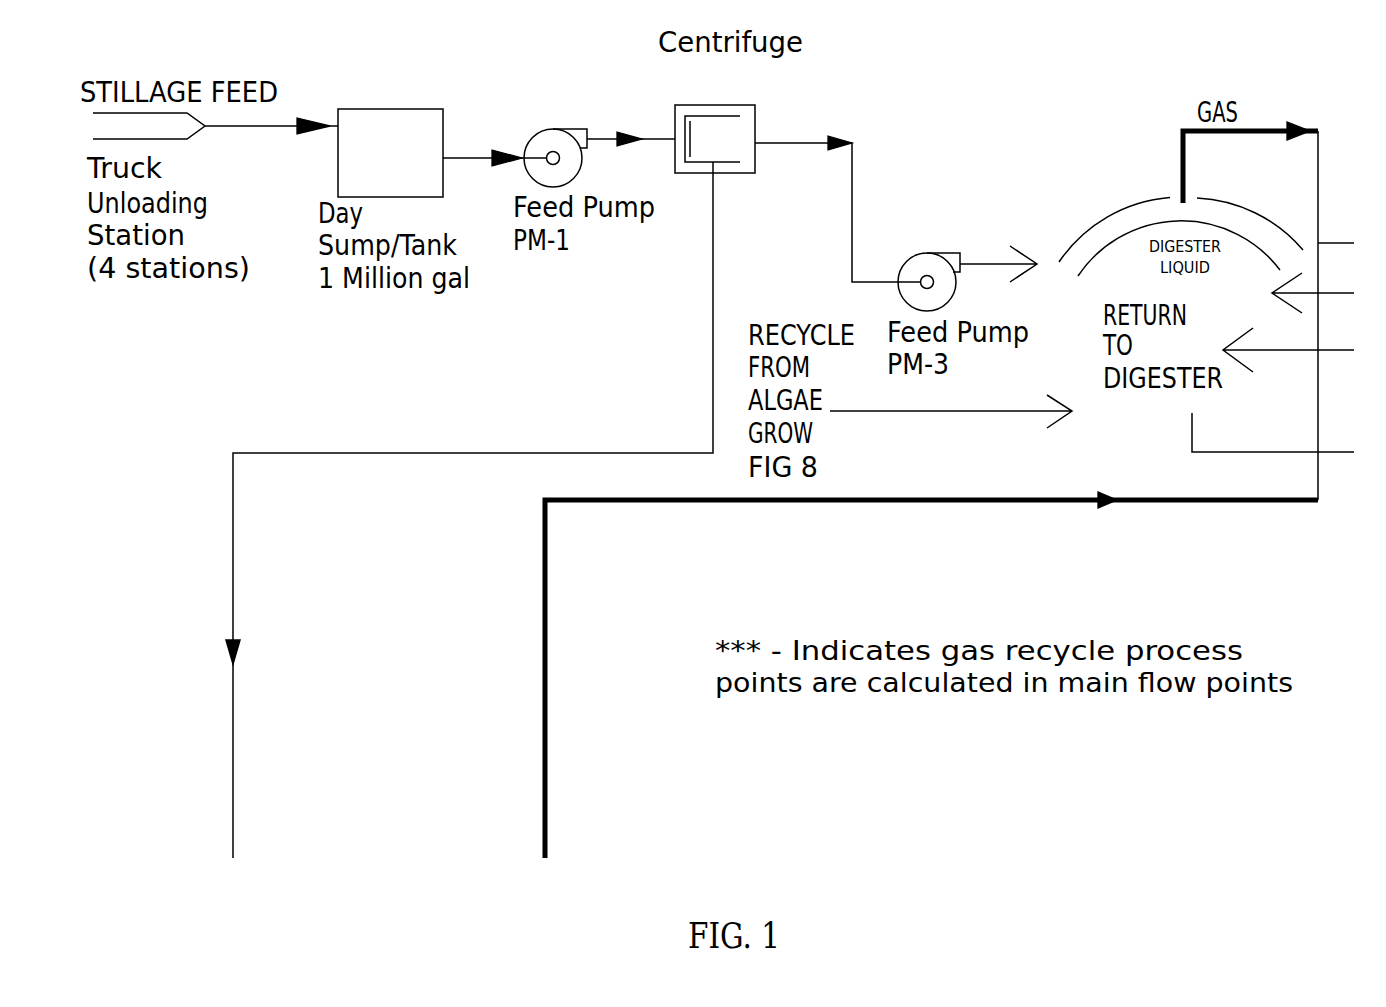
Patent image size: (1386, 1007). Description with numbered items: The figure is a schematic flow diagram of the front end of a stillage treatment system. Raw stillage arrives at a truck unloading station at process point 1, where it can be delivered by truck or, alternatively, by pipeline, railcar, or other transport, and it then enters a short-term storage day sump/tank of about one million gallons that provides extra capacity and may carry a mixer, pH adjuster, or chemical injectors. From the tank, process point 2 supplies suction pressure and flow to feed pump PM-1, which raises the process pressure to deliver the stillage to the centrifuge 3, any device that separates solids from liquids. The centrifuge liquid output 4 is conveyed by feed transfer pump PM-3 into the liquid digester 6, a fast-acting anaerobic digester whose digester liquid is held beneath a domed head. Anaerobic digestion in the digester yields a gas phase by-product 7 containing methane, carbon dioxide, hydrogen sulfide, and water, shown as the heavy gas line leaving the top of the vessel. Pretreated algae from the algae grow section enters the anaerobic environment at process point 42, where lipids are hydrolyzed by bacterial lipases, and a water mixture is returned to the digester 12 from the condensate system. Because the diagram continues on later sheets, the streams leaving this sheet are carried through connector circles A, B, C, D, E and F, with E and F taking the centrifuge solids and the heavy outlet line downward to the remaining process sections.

The process point 1 is at (215, 107).
The process point 2 is at (495, 137).
The centrifuge 3 is at (631, 120).
The centrifuge liquid output 4 is at (838, 191).
The liquid digester 6 is at (998, 252).
The gas phase by-product 7 is at (1250, 144).
The digester 12 is at (1288, 322).
The process point 42 is at (951, 397).
The connector A is at (1352, 243).
The connector B is at (1370, 293).
The connector C is at (1370, 350).
The connector D is at (1289, 440).
The connector E is at (233, 874).
The connector F is at (545, 874).